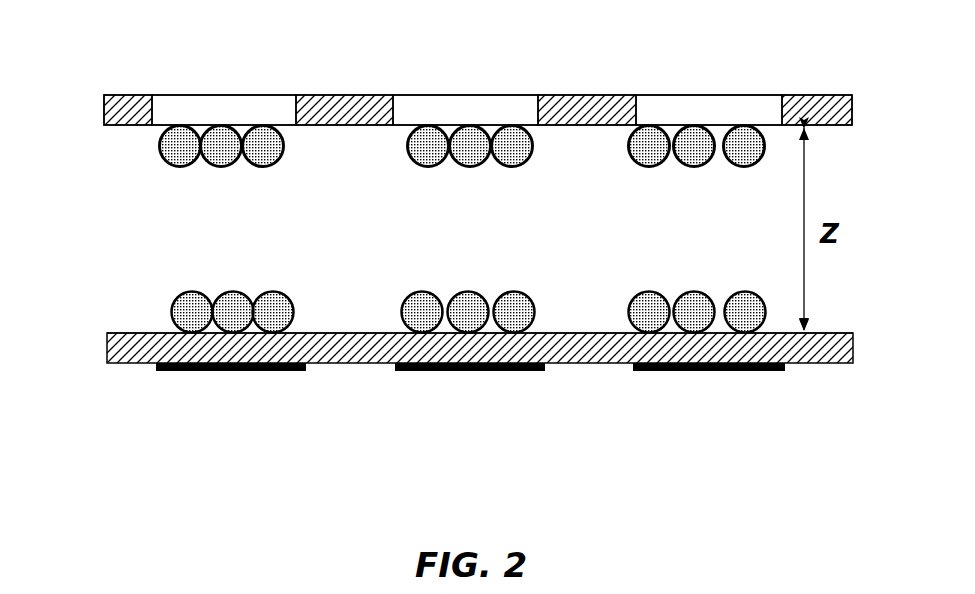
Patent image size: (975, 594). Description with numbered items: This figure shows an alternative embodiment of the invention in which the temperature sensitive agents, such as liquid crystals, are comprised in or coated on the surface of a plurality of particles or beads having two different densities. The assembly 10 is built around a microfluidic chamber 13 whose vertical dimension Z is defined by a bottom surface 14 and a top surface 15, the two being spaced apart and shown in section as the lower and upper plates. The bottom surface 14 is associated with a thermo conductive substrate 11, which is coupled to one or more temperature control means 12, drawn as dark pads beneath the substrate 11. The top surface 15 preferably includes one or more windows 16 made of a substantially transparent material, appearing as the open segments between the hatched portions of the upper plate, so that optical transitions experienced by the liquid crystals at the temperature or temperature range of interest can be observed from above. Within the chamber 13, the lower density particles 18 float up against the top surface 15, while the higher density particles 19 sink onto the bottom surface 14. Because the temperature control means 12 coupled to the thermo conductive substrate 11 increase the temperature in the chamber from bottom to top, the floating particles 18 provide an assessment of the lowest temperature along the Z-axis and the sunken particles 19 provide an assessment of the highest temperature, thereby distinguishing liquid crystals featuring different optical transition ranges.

The semiconductor package assembly 10 is at (479, 358).
The thermo conductive substrate 11 is at (835, 352).
The temperature control means 12 is at (232, 371).
The microfluidic chamber 13 is at (172, 225).
The bottom surface 14 is at (152, 333).
The top surface 15 is at (154, 126).
The windows 16 is at (223, 110).
The lower density particles 18 is at (735, 164).
The higher density particles 19 is at (418, 293).